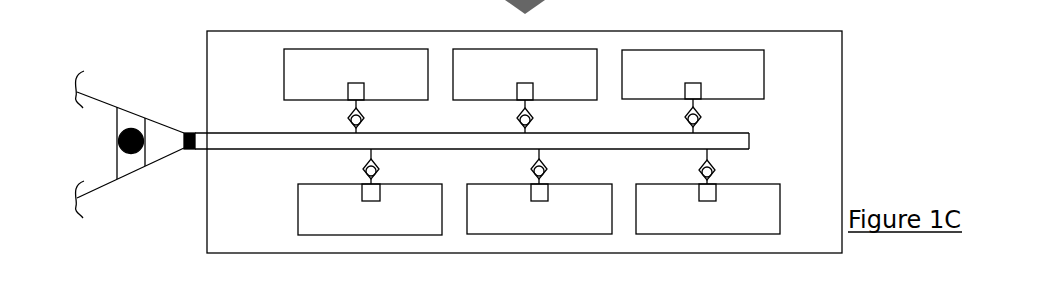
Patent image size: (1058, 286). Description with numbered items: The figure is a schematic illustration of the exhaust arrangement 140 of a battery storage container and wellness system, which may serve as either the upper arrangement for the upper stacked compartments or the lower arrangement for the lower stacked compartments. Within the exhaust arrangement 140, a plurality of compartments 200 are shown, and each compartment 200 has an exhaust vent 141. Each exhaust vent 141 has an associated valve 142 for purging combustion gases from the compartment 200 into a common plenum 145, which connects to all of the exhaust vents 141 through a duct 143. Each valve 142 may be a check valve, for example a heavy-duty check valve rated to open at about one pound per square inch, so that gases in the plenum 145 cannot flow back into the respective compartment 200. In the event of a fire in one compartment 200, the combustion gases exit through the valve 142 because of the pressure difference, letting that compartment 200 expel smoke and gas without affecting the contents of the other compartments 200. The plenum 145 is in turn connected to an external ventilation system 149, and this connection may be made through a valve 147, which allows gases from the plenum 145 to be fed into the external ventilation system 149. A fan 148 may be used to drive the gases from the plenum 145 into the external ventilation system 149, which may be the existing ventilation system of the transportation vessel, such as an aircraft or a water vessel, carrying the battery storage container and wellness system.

The exhaust arrangement 140 is at (723, 26).
The compartment 200 is at (320, 73).
The exhaust vent 141 is at (364, 84).
The valve 142 is at (348, 107).
The duct 143 is at (361, 128).
The plenum 145 is at (597, 149).
The valve 147 is at (192, 149).
The fan 148 is at (131, 128).
The external ventilation system 149 is at (108, 97).